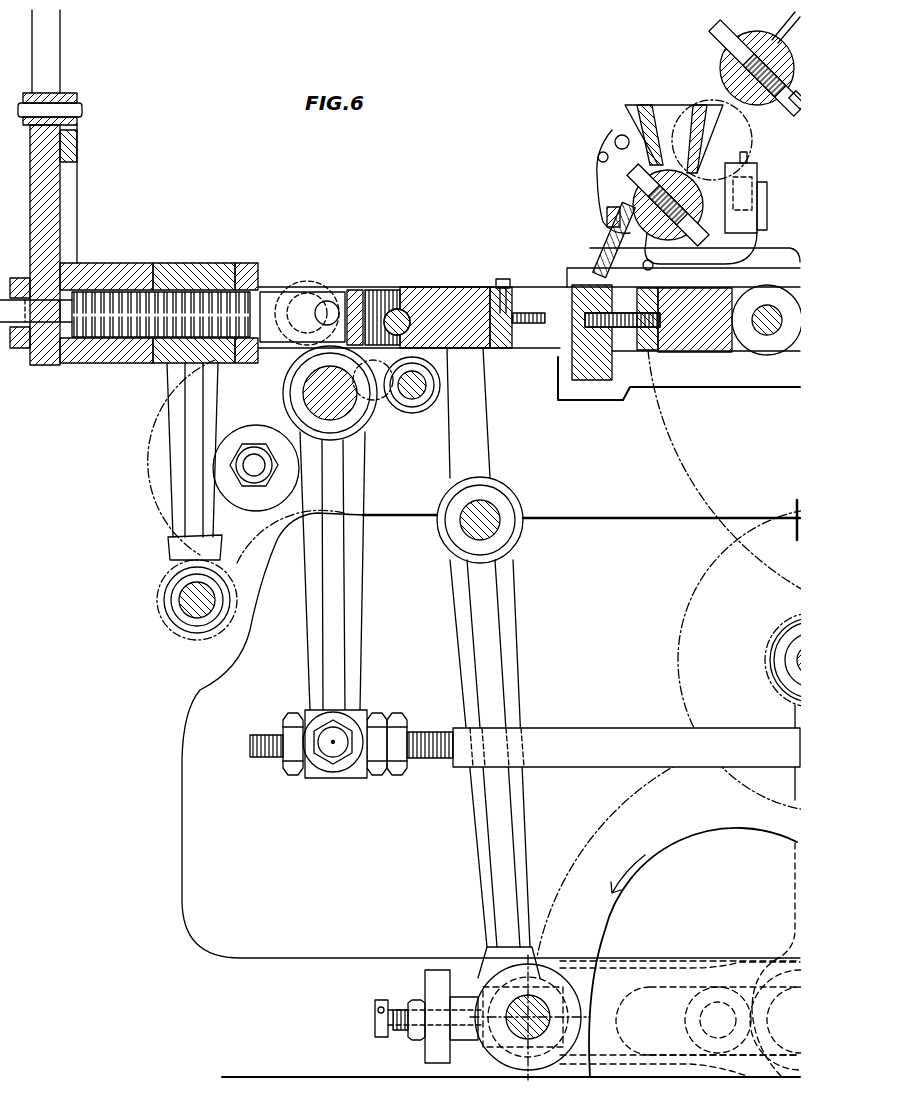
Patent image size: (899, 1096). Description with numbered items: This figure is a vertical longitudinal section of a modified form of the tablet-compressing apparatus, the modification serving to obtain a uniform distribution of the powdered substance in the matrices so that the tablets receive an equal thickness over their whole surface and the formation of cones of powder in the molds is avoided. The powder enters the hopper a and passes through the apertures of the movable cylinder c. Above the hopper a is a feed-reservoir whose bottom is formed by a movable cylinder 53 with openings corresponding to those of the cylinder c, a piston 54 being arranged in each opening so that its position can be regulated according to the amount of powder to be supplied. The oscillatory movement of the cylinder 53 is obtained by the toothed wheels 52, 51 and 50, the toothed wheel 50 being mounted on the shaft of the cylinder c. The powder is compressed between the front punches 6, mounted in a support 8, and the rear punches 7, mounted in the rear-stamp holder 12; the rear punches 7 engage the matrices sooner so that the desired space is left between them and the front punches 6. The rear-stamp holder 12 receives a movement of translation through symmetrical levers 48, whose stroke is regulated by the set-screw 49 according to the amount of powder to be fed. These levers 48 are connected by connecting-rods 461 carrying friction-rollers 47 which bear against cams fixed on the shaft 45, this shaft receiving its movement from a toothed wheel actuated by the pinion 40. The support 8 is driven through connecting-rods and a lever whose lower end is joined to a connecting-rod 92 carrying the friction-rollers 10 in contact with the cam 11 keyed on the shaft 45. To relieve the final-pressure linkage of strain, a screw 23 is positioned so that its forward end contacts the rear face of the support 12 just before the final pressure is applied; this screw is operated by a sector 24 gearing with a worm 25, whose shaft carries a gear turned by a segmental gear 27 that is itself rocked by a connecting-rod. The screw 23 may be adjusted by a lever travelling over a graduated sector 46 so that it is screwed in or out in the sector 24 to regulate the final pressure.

The shaft 45 is at (55, 48).
The cam 46 is at (75, 147).
The screw 23 is at (157, 263).
The sector 24 is at (185, 410).
The worm 25 is at (180, 600).
The segmental gear 27 is at (150, 483).
The rear-stamp holder 12 is at (442, 297).
The rear punch 7 is at (537, 327).
The front punch 6 is at (647, 350).
The support 8 is at (705, 337).
The symmetrical lever 48 is at (480, 453).
The pinion 40 is at (770, 657).
The cam 11 is at (693, 952).
The connecting-rod 461 is at (605, 985).
The friction-roller 47 is at (692, 1020).
The connecting-rod 92 is at (682, 1063).
The friction-roller 10 is at (530, 1017).
The set-screw 49 is at (375, 1025).
The toothed wheel 50 is at (637, 188).
The movable cylinder c is at (603, 220).
The hopper a is at (657, 113).
The toothed wheel 51 is at (697, 100).
The toothed wheel 52 is at (717, 57).
The movable cylinder 53 is at (717, 77).
The piston 54 is at (737, 50).